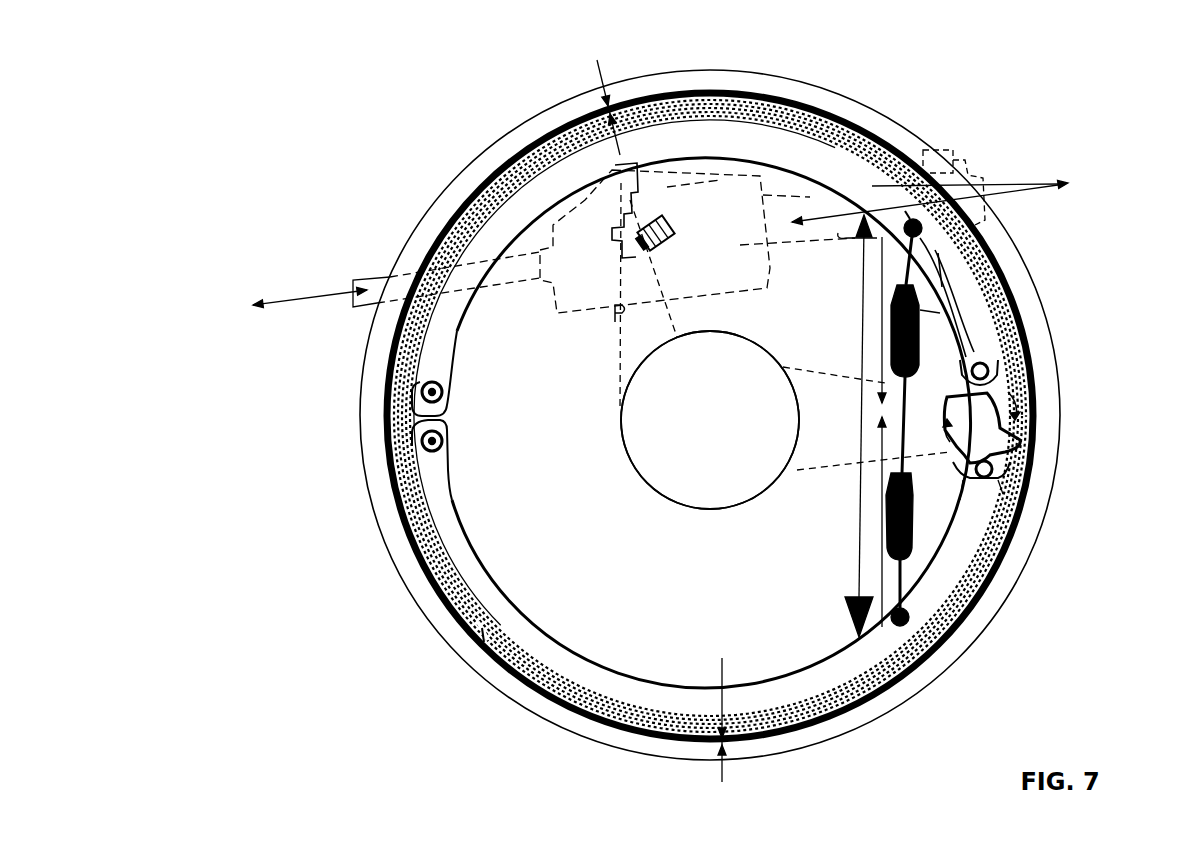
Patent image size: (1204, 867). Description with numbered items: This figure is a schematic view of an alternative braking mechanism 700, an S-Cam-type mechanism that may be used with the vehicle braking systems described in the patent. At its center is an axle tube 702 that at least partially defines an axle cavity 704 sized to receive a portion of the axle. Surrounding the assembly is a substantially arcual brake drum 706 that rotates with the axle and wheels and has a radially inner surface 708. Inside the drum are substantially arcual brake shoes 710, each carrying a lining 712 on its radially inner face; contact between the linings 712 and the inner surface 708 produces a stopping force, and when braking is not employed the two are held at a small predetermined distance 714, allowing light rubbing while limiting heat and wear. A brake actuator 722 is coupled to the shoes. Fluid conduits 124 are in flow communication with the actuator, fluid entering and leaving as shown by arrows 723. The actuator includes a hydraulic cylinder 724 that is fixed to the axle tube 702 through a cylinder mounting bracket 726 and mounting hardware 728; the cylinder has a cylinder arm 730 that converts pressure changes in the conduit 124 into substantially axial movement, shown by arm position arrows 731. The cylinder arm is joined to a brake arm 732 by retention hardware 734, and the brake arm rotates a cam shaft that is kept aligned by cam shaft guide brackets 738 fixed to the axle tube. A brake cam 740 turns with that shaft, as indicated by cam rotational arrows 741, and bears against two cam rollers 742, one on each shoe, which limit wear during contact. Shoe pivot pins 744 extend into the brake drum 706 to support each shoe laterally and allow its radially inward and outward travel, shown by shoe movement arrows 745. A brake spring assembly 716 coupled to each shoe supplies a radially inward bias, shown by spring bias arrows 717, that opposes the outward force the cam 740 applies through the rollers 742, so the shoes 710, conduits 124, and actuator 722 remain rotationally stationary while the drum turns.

The alternative braking mechanism 700 is at (275, 130).
The brake drum 706 is at (442, 187).
The radially inner surface 708 is at (517, 155).
The brake shoes 710 is at (641, 143).
The lining 712 is at (483, 640).
The predetermined distance 714 is at (600, 100).
The brake actuator 722 is at (797, 150).
The shoe pivot pins 744 is at (427, 391).
The fluid conduits 124 is at (355, 275).
The arrows 723 is at (303, 300).
The hydraulic cylinder 724 is at (680, 273).
The mounting hardware 728 is at (660, 222).
The cylinder mounting bracket 726 is at (614, 315).
The axle tube 702 is at (645, 478).
The axle cavity 704 is at (692, 408).
The cylinder arm 730 is at (818, 240).
The arm position arrows 731 is at (1025, 185).
The retention hardware 734 is at (940, 150).
The shoe movement arrows 745 is at (853, 512).
The cam shaft guide brackets 738 is at (843, 432).
The spring bias arrows 717 is at (908, 614).
The brake spring assembly 716 is at (915, 503).
The brake arm 732 is at (947, 352).
The cam rollers 742 is at (992, 370).
The brake cam 740 is at (990, 417).
The cam rotational arrows 741 is at (1020, 397).